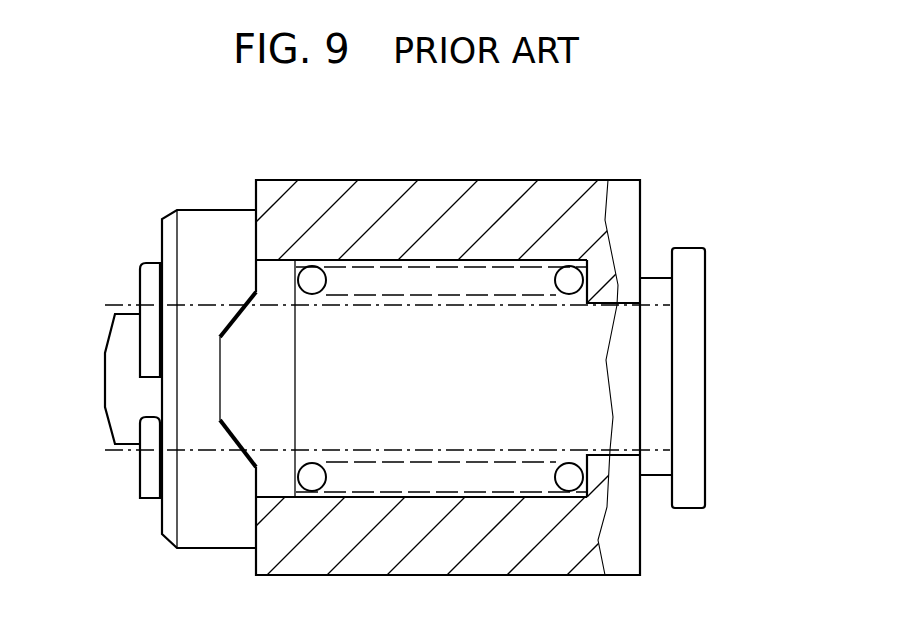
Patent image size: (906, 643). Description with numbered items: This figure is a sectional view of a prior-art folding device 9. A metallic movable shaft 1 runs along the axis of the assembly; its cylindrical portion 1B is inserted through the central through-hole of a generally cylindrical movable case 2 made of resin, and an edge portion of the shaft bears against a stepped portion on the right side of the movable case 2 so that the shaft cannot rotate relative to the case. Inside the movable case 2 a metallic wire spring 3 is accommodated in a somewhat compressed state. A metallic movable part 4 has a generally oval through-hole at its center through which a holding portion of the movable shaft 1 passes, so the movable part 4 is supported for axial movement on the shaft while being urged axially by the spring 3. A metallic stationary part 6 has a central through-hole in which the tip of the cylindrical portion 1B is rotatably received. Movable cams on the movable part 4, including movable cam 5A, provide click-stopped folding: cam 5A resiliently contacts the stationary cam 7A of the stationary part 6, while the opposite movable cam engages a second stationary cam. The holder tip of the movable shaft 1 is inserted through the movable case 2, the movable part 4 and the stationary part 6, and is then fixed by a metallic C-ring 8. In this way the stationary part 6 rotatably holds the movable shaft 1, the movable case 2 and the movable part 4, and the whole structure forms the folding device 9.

The folding device 9 is at (685, 197).
The movable shaft 1 is at (655, 387).
The cylindrical portion 1B is at (583, 413).
The movable case 2 is at (548, 220).
The spring 3 is at (417, 278).
The movable part 4 is at (275, 273).
The movable cam 5A is at (224, 388).
The stationary part 6 is at (197, 225).
The stationary cam 7A is at (213, 369).
The C-ring 8 is at (148, 262).